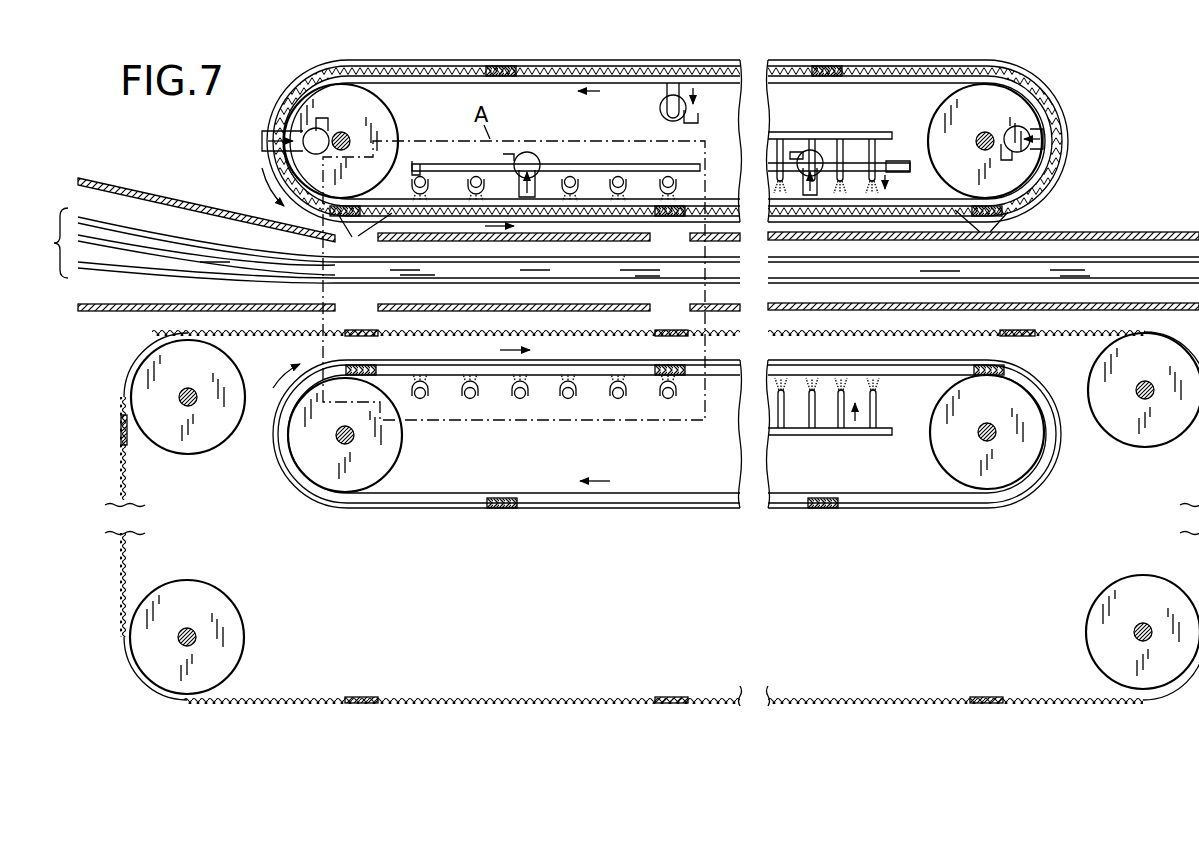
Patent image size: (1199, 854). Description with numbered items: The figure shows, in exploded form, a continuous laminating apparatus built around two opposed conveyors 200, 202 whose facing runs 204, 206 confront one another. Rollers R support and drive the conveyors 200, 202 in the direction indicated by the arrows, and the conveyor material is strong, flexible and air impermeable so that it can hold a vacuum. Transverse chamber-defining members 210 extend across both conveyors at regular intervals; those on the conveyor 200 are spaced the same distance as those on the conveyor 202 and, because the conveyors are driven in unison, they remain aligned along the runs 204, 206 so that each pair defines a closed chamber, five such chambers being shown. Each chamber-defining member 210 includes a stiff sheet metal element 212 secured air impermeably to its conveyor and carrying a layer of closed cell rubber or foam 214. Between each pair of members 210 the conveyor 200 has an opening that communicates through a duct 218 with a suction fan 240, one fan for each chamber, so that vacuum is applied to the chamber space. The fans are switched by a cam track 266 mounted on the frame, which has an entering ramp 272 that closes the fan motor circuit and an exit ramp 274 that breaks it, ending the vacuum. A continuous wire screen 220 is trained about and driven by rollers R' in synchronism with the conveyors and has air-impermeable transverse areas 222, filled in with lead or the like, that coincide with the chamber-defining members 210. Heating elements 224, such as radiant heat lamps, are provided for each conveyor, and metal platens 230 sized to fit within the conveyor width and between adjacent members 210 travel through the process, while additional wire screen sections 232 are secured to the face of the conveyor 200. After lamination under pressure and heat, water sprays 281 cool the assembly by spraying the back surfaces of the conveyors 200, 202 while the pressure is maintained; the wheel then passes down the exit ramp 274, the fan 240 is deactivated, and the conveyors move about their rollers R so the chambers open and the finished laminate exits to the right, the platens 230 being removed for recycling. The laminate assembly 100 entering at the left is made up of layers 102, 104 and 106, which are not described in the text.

The laminate assembly 100 is at (56, 207).
The lower sheet 102 is at (160, 272).
The intermediate layer 104 is at (105, 246).
The upper sheet 106 is at (138, 231).
The conveyor 200 is at (1072, 133).
The conveyor 202 is at (948, 512).
The facing run 204 is at (477, 80).
The facing run 206 is at (727, 372).
The chamber-defining member 210 is at (501, 62).
The sheet metal element 212 is at (843, 67).
The layer of closed cell rubber or foam 214 is at (818, 62).
The duct 218 is at (672, 88).
The wire screen 220 is at (862, 695).
The transverse area 222 is at (365, 340).
The heating element 224 is at (474, 174).
The metal platen 230 is at (184, 202).
The wire screen section 232 is at (672, 235).
The suction fan 240 is at (275, 131).
The cam track 266 is at (562, 166).
The entering ramp 272 is at (413, 167).
The exit ramp 274 is at (902, 162).
The water spray 281 is at (870, 148).
The roller R is at (672, 289).
The roller R' is at (664, 513).